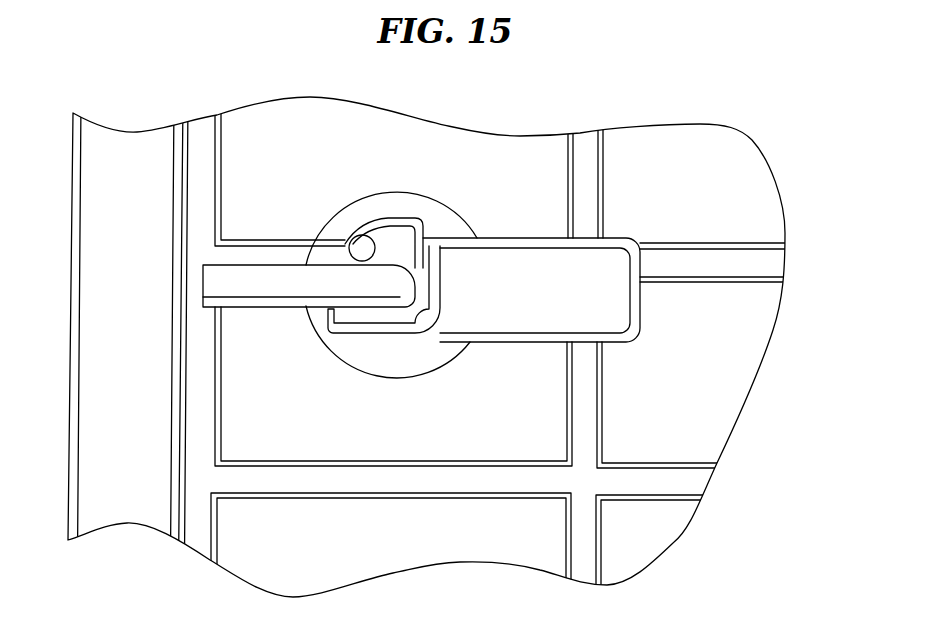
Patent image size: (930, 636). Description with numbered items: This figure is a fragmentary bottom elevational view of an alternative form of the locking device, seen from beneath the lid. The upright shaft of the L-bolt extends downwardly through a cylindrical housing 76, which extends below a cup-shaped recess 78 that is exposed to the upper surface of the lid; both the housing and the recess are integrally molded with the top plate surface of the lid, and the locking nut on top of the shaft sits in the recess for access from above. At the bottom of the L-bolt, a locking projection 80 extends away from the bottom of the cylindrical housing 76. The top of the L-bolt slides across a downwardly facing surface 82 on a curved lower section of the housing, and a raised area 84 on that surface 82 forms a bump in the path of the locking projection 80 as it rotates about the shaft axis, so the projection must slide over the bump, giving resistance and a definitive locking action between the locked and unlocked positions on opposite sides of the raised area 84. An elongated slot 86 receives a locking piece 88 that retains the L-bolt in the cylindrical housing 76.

The cylindrical housing 76 is at (393, 247).
The cup-shaped recess 78 is at (430, 372).
The locking projection 80 is at (252, 280).
The downwardly facing surface 82 is at (393, 218).
The raised area 84 is at (361, 246).
The elongated slot 86 is at (527, 236).
The locking piece 88 is at (552, 302).